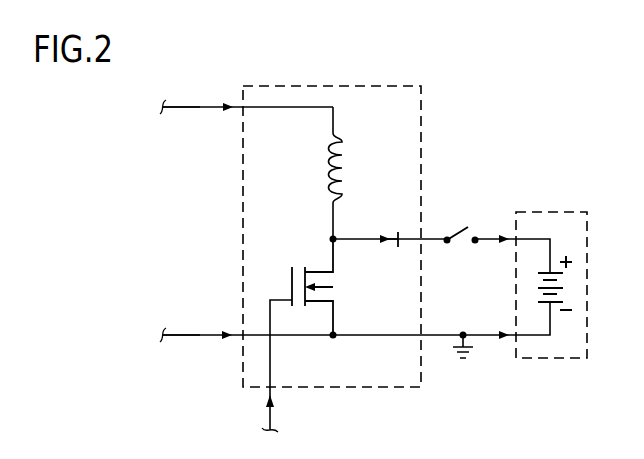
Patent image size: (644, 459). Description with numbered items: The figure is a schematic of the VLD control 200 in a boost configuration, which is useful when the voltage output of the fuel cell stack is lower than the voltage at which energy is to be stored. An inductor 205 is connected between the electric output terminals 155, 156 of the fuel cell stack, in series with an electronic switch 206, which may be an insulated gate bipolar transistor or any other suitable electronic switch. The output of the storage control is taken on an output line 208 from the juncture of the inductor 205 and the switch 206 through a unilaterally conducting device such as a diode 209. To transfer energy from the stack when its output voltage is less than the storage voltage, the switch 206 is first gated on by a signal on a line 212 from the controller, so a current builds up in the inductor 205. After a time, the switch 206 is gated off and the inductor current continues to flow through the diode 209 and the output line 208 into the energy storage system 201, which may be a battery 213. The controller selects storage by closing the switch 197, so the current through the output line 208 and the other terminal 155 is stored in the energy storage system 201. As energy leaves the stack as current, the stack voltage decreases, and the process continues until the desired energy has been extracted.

The electric output terminal 155 is at (183, 334).
The electric output terminal 156 is at (182, 106).
The switch 197 is at (452, 230).
The VLD control 200 is at (421, 124).
The energy storage system 201 is at (537, 212).
The inductor 205 is at (342, 162).
The electronic switch 206 is at (326, 282).
The output line 208 is at (399, 247).
The diode 209 is at (397, 237).
The signal line 212 is at (267, 414).
The battery 213 is at (563, 283).